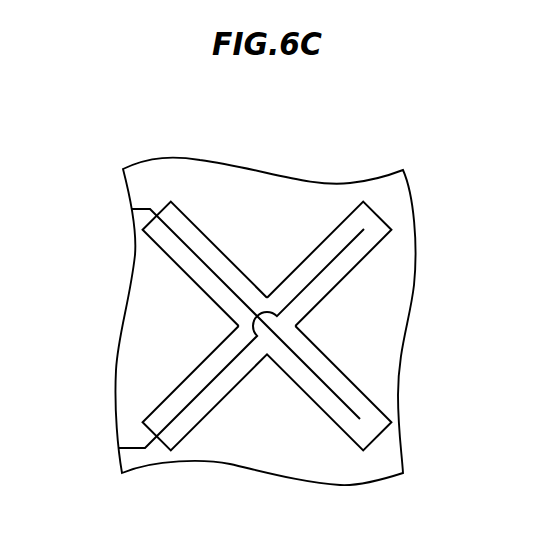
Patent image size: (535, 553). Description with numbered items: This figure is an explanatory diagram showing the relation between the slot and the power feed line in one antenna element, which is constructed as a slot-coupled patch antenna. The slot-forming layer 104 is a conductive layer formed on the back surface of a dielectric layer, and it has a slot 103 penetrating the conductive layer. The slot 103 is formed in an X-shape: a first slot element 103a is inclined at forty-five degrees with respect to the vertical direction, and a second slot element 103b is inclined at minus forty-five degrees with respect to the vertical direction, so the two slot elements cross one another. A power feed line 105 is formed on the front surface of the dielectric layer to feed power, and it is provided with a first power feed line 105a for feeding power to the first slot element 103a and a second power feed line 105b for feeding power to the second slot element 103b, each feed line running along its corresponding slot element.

The slot 103 is at (267, 330).
The first slot element 103a is at (377, 237).
The second slot element 103b is at (156, 239).
The slot-forming layer 104 is at (383, 463).
The power feed line 105 is at (267, 328).
The first power feed line 105a is at (186, 245).
The second power feed line 105b is at (348, 245).